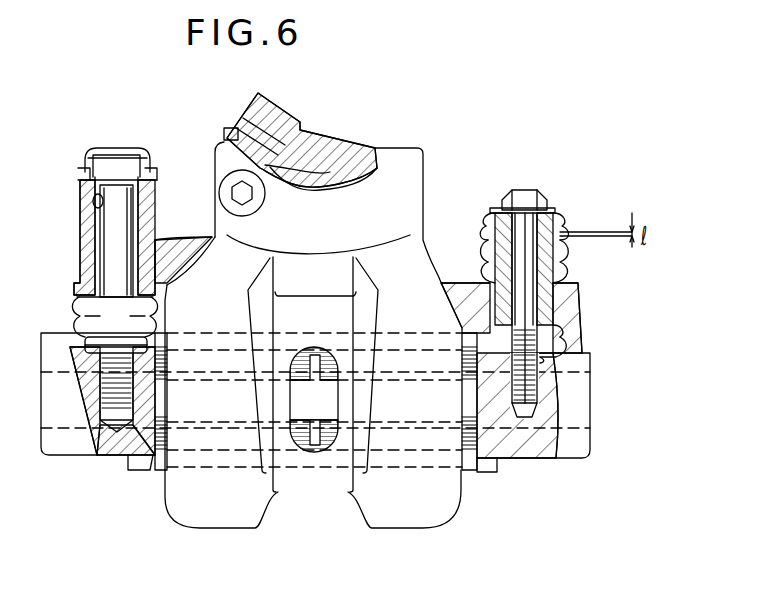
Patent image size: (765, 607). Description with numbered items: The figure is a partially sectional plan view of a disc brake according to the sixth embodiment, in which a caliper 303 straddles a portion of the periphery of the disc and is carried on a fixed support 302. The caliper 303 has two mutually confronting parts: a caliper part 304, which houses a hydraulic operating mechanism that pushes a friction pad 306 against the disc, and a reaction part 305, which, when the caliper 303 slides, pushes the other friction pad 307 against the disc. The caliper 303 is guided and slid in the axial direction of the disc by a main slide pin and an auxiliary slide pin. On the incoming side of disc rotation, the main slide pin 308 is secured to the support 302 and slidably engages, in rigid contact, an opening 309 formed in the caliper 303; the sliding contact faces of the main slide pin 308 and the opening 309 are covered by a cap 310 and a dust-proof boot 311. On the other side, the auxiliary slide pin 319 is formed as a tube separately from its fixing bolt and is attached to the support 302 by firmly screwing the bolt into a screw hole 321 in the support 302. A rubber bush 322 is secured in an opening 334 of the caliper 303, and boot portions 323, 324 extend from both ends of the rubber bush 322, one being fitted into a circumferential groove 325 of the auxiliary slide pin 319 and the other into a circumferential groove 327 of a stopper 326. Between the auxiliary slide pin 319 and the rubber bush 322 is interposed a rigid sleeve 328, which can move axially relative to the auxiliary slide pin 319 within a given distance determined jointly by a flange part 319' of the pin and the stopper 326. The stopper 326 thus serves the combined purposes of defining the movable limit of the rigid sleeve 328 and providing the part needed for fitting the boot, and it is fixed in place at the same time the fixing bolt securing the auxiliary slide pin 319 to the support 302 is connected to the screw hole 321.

The support 302 is at (58, 448).
The caliper 303 is at (173, 520).
The caliper part 304 is at (403, 163).
The reaction part 305 is at (410, 517).
The friction pad 306 is at (328, 360).
The friction pad 307 is at (307, 448).
The main slide pin 308 is at (115, 225).
The opening 309 is at (97, 199).
The cap 310 is at (122, 148).
The dust-proof boot 311 is at (78, 328).
The auxiliary slide pin 319 is at (579, 214).
The flange part 319' is at (593, 378).
The screw hole 321 is at (522, 418).
The rubber bush 322 is at (560, 280).
The boot portion 323 is at (562, 330).
The boot portion 324 is at (490, 237).
The circumferential groove 325 is at (563, 357).
The stopper 326 is at (497, 208).
The circumferential groove 327 is at (492, 218).
The rigid sleeve 328 is at (487, 262).
The opening 334 is at (563, 297).